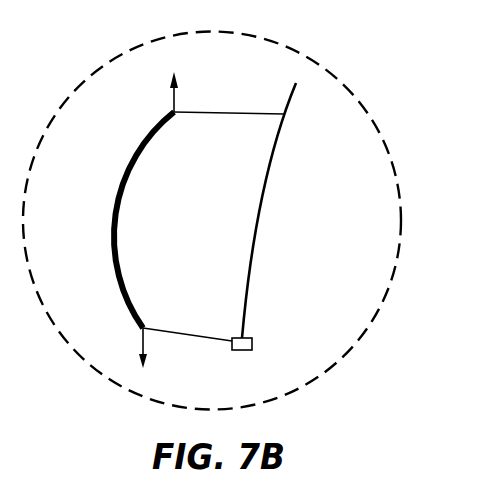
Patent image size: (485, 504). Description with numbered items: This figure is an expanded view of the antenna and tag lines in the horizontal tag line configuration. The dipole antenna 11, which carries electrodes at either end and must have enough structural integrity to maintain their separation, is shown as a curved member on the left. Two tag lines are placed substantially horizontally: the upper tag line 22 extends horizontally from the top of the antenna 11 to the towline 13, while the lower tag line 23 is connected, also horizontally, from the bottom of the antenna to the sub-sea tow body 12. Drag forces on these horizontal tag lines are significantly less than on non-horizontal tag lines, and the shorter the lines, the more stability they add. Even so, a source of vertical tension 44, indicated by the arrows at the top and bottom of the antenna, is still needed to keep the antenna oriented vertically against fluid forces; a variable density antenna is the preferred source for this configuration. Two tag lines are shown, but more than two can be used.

The dipole antenna 11 is at (123, 197).
The sub-sea tow body 12 is at (248, 350).
The towline 13 is at (292, 102).
The upper tag line 22 is at (216, 115).
The lower tag line 23 is at (176, 332).
The vertical tension 44 is at (174, 102).